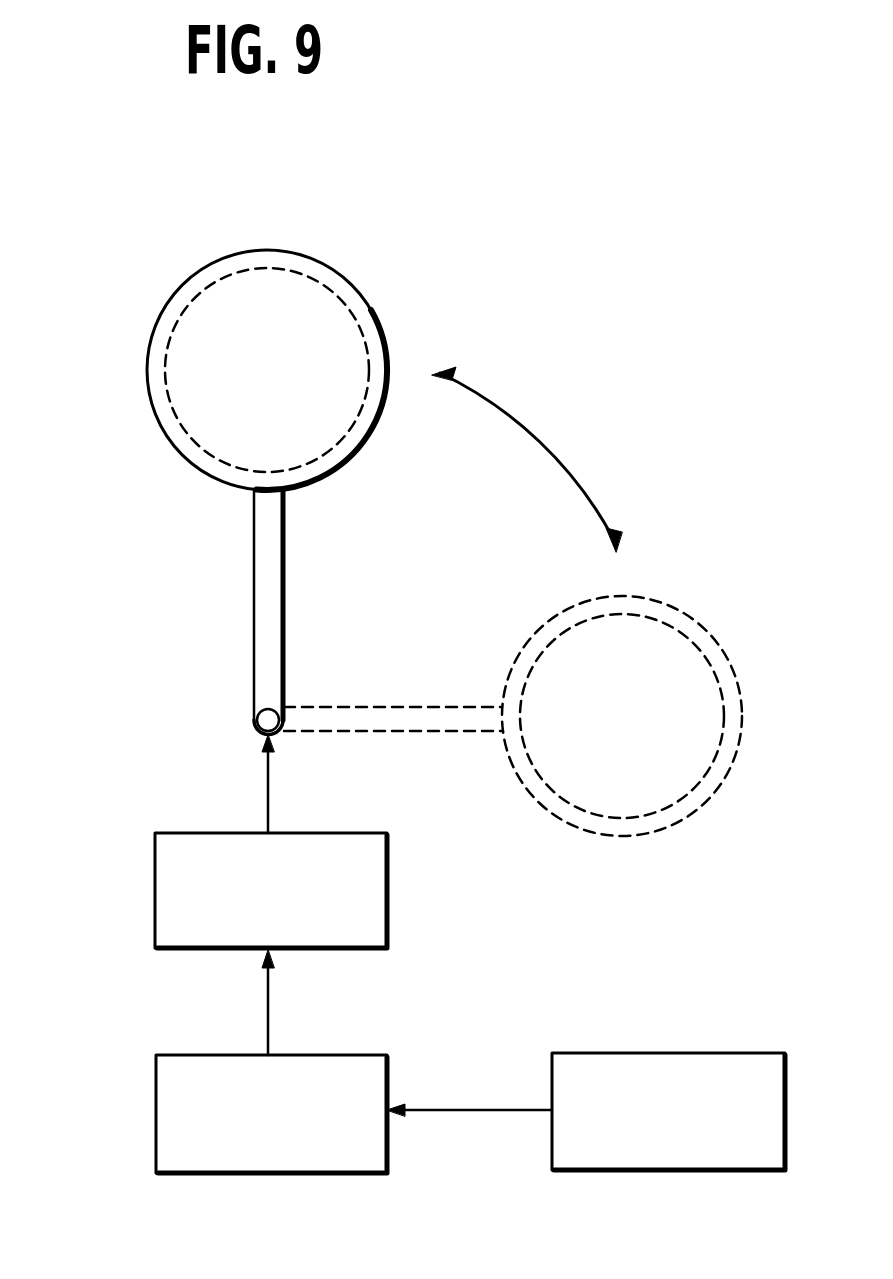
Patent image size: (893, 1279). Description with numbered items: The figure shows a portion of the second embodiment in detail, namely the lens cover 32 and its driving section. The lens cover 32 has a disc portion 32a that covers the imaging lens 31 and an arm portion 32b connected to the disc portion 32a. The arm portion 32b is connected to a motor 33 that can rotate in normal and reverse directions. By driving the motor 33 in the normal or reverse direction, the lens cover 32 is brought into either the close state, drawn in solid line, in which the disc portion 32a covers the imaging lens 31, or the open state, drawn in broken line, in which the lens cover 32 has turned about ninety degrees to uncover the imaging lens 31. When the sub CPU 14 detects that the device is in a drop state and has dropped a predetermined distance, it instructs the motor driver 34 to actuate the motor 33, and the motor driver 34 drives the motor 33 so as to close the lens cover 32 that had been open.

The sub CPU 14 is at (660, 1053).
The imaging lens 31 is at (283, 268).
The lens cover 32 is at (190, 245).
The disc portion 32a is at (360, 327).
The arm portion 32b is at (256, 582).
The motor 33 is at (155, 885).
The motor driver 34 is at (156, 1110).